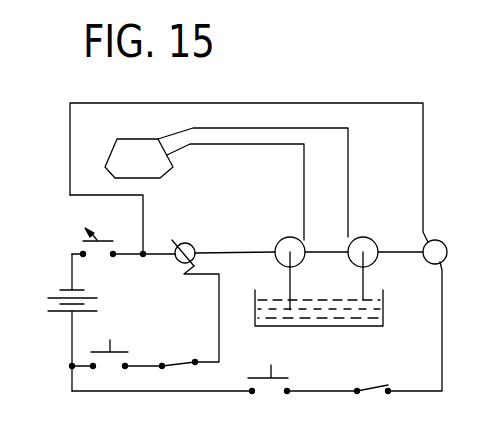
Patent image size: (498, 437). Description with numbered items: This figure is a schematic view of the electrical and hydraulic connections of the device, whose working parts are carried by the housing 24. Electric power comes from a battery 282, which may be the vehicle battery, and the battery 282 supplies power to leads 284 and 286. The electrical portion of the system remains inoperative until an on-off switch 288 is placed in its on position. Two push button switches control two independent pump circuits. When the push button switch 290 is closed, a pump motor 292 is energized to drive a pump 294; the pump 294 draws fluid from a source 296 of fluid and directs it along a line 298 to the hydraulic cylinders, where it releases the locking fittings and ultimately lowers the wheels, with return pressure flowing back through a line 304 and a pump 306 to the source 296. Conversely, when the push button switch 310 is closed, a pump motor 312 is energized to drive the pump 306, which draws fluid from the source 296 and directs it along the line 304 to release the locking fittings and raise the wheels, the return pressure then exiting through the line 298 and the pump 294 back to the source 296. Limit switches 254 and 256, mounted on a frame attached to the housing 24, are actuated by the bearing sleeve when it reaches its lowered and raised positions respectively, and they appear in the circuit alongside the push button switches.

The housing 24 is at (116, 153).
The limit switch 254 is at (172, 362).
The limit switch 256 is at (372, 383).
The battery 282 is at (80, 289).
The lead 284 is at (68, 266).
The lead 286 is at (70, 352).
The on-off switch 288 is at (98, 238).
The push button switch 290 is at (273, 368).
The pump motor 292 is at (438, 258).
The pump 294 is at (364, 237).
The source of fluid 296 is at (367, 313).
The line 298 is at (227, 127).
The line 304 is at (304, 164).
The pump 306 is at (287, 237).
The push button switch 310 is at (111, 342).
The pump motor 312 is at (194, 240).